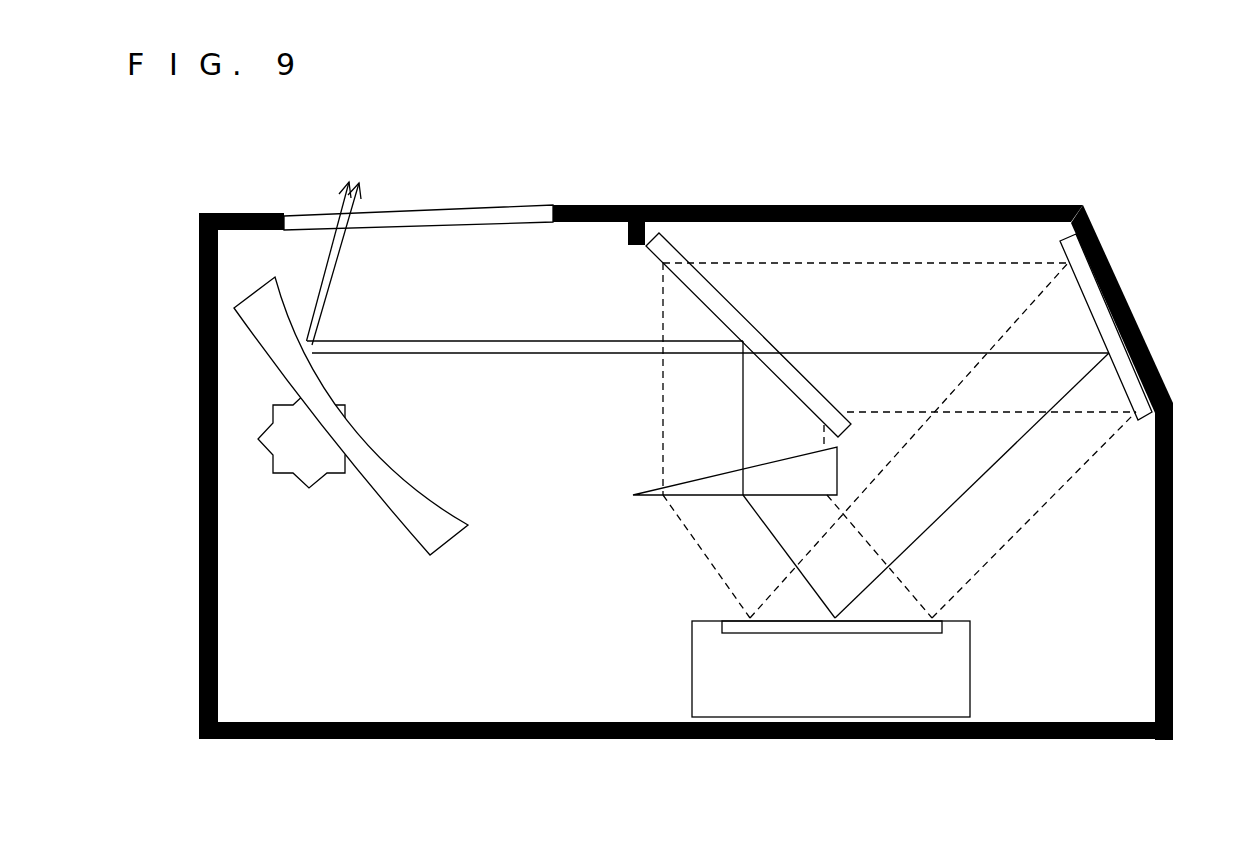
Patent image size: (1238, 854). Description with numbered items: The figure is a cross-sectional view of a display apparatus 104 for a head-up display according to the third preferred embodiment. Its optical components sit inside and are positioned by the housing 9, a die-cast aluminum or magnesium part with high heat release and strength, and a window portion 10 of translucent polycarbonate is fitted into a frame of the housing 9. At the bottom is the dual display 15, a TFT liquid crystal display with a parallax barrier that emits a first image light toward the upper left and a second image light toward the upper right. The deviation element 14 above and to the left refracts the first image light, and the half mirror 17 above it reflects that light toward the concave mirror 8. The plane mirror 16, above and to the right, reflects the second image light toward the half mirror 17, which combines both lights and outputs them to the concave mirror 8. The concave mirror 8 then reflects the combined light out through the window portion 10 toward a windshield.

The display apparatus 104 is at (254, 170).
The concave mirror 8 is at (435, 542).
The housing 9 is at (199, 477).
The window portion 10 is at (470, 206).
The deviation element 14 is at (720, 488).
The dual display 15 is at (960, 645).
The plane mirror 16 is at (1092, 292).
The half mirror 17 is at (673, 262).